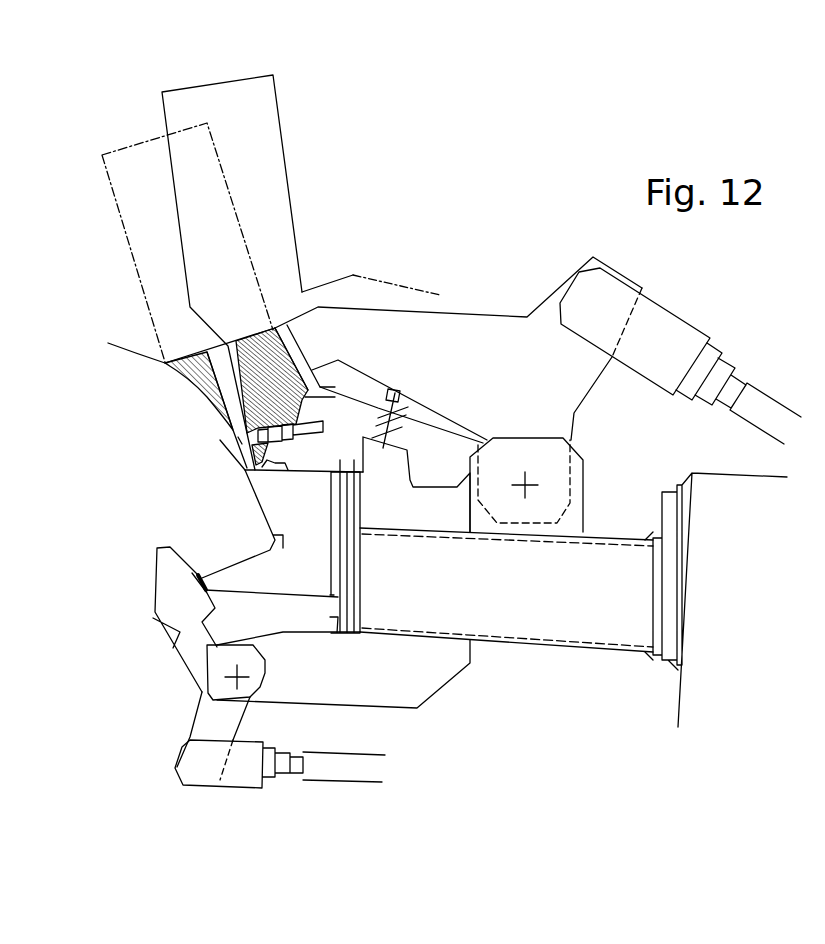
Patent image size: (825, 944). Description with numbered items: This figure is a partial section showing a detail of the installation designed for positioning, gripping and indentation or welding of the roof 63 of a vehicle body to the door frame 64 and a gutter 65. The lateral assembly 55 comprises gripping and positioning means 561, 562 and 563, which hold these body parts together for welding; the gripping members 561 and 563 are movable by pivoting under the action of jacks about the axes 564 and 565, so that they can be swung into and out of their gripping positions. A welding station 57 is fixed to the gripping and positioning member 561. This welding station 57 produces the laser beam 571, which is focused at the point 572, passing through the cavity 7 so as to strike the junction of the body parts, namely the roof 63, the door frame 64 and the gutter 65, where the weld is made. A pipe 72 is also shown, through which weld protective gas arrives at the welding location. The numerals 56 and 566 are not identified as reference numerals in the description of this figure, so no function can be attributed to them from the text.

The welding station 57 is at (267, 167).
The gripping and positioning member 561 is at (168, 372).
The laser beam 571 is at (207, 397).
The cavity 7 is at (225, 380).
The focus point 572 is at (245, 470).
The roof 63 is at (238, 438).
The door frame 64 is at (267, 517).
The gutter 65 is at (289, 472).
The pipe 72 is at (323, 433).
The clamping device body 56 is at (429, 482).
The gripping and positioning means 562 is at (323, 587).
The lateral assembly 55 is at (773, 575).
The pivot axis 564 is at (530, 488).
The gripping member 563 is at (195, 618).
The pivot axis 565 is at (247, 675).
The upper actuating cylinder 566 is at (680, 356).